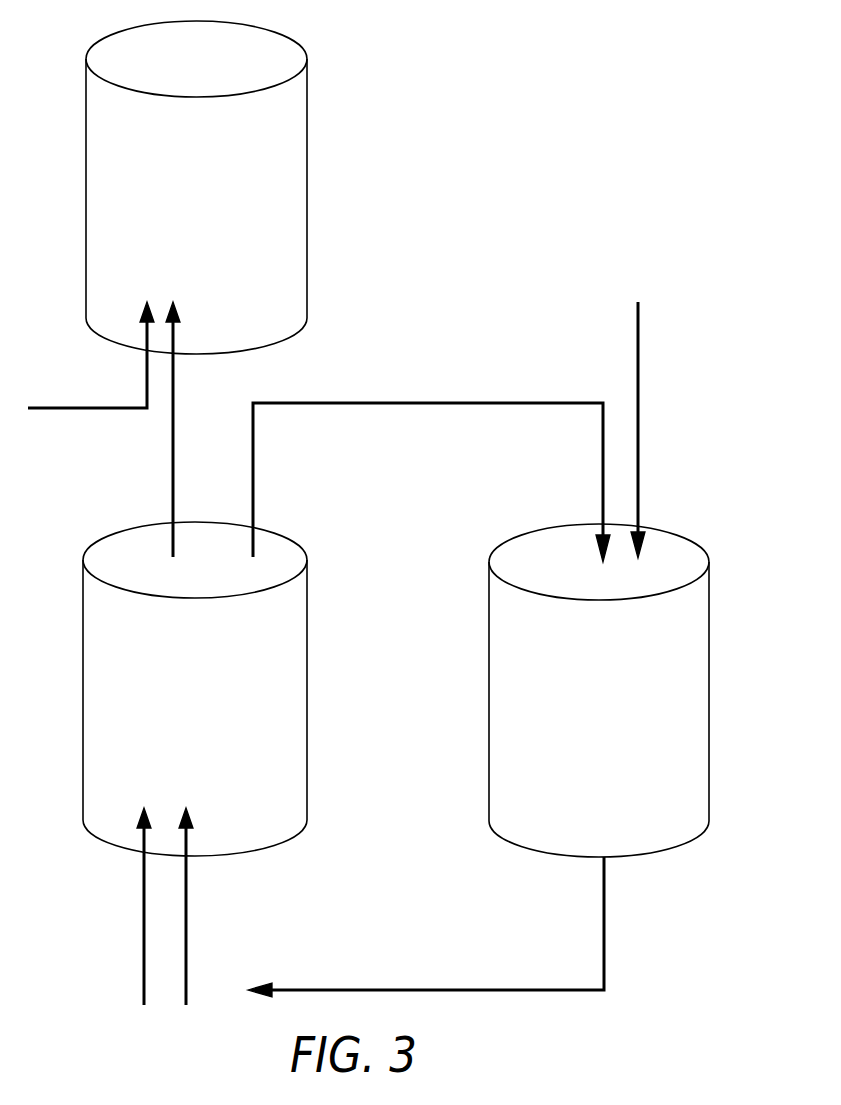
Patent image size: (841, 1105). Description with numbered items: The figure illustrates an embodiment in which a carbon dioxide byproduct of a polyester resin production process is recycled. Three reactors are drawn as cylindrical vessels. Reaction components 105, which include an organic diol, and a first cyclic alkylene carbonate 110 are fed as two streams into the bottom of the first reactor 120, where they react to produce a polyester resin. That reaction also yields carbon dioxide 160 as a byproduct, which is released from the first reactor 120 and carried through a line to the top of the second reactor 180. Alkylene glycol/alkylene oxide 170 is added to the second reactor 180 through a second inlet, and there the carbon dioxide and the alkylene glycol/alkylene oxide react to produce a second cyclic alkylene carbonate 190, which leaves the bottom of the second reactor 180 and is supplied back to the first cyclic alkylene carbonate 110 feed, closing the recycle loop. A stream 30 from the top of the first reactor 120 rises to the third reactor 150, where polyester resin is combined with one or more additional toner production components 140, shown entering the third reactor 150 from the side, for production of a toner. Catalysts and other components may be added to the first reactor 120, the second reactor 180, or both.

The third reactor 150 is at (98, 180).
The first reactor 120 is at (96, 685).
The second reactor 180 is at (502, 682).
The additional toner production components 140 is at (67, 405).
The stream from second vessel 30 is at (172, 458).
The carbon dioxide 160 is at (421, 402).
The alkylene glycol/alkylene oxide 170 is at (636, 345).
The reaction components 105 is at (142, 940).
The first cyclic alkylene carbonate 110 is at (188, 940).
The second cyclic alkylene carbonate 190 is at (391, 990).